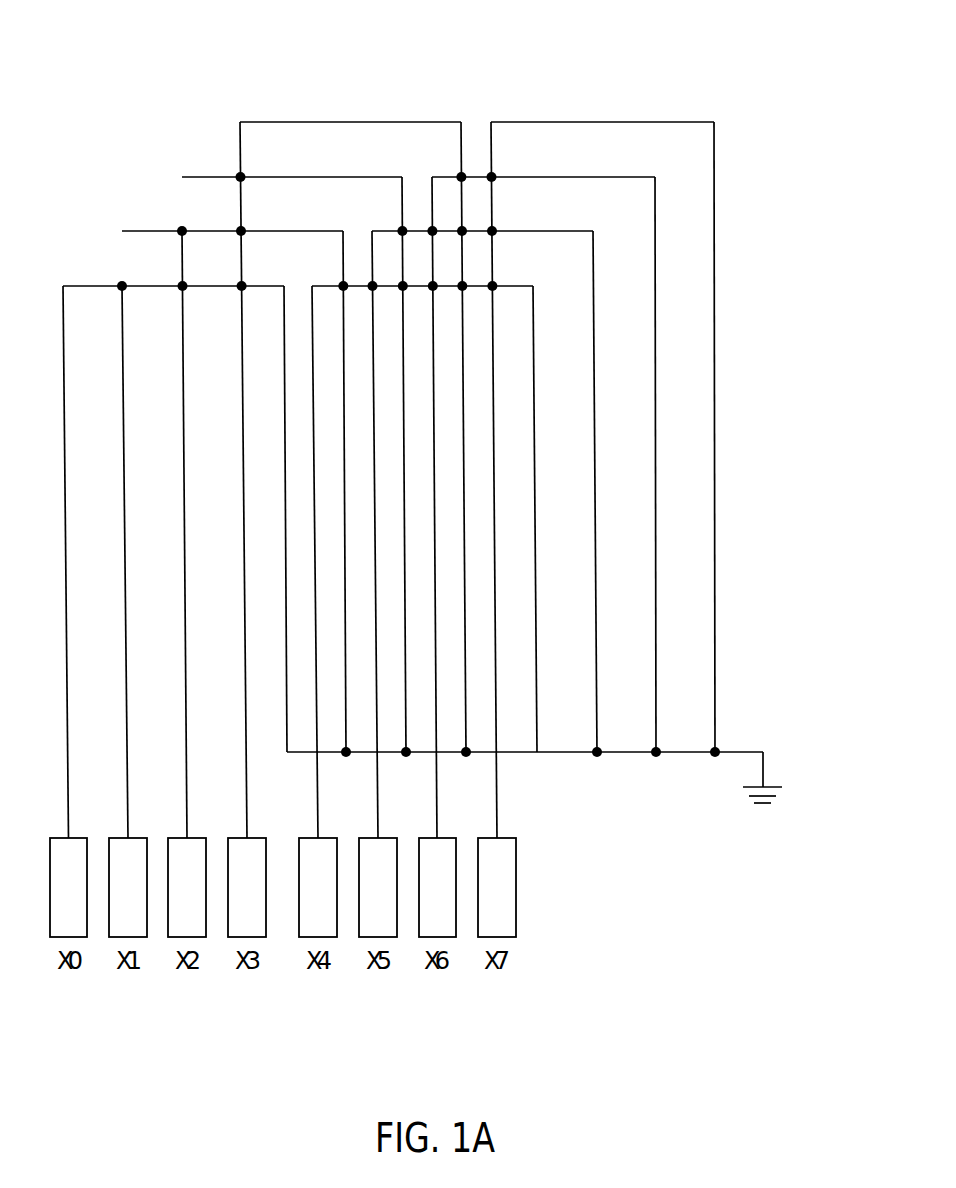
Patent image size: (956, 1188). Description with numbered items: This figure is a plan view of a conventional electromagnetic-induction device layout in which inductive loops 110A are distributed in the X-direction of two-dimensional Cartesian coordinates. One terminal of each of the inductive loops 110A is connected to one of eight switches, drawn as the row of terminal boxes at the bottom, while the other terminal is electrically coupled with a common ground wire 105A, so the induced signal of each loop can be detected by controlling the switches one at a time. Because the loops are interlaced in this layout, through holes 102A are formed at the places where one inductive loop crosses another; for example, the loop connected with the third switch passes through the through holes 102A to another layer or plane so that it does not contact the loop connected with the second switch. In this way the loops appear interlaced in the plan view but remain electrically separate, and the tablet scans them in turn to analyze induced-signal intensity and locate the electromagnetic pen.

The inductive loops 110A is at (333, 121).
The through holes 102A is at (182, 230).
The ground wire 105A is at (763, 772).